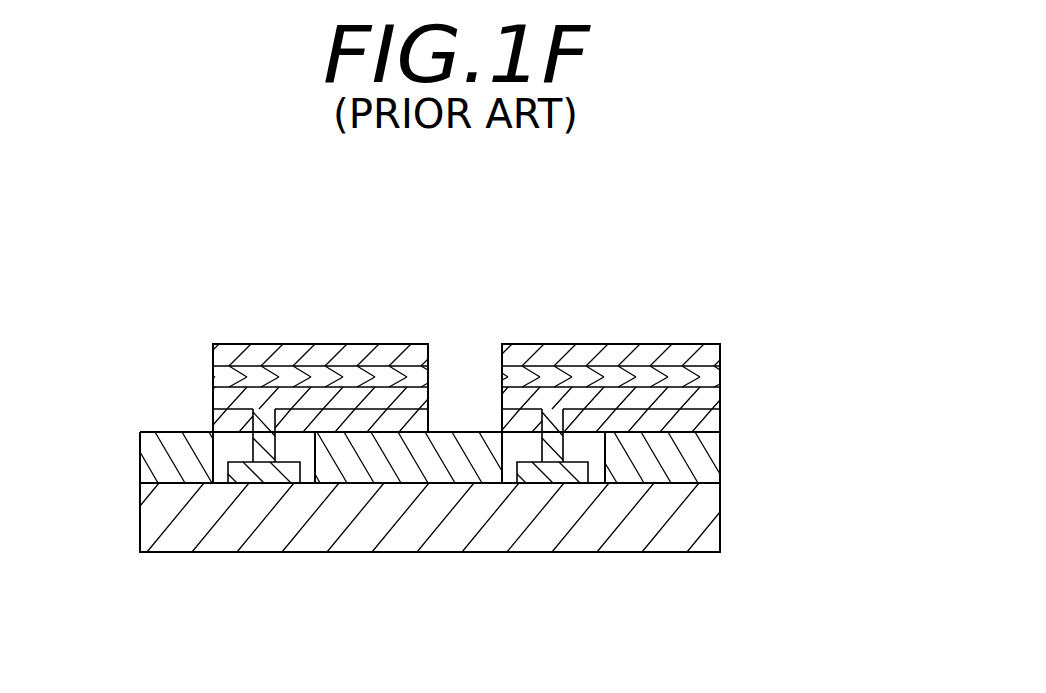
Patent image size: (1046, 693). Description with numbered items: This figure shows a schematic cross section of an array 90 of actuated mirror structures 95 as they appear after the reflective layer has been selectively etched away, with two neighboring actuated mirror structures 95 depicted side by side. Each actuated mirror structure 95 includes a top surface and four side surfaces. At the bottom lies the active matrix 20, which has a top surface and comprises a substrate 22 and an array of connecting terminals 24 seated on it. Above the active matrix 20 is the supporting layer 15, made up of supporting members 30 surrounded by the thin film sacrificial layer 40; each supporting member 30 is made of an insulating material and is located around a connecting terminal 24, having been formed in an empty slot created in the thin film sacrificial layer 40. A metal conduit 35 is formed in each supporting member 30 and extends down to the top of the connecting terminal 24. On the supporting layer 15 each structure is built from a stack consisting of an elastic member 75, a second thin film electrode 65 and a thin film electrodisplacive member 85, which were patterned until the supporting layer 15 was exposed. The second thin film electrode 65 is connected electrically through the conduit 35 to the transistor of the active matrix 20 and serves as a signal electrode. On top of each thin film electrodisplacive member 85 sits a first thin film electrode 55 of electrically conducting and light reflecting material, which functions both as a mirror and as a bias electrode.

The array of actuated mirror structures 90 is at (753, 138).
The actuated mirror structure 95 is at (215, 225).
The supporting layer 15 is at (443, 447).
The active matrix 20 is at (127, 462).
The substrate 22 is at (393, 553).
The connecting terminal 24 is at (268, 476).
The supporting member 30 is at (298, 443).
The conduit 35 is at (270, 412).
The thin film sacrificial layer 40 is at (700, 453).
The first thin film electrode 55 is at (710, 345).
The second thin film electrode 65 is at (703, 403).
The elastic member 75 is at (703, 425).
The thin film electrodisplacive member 85 is at (705, 373).